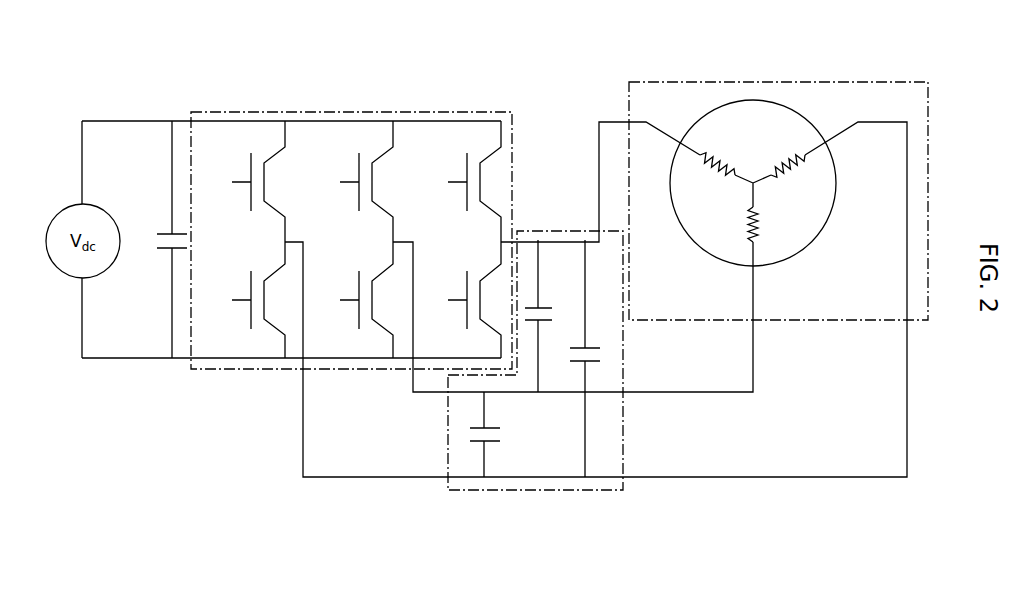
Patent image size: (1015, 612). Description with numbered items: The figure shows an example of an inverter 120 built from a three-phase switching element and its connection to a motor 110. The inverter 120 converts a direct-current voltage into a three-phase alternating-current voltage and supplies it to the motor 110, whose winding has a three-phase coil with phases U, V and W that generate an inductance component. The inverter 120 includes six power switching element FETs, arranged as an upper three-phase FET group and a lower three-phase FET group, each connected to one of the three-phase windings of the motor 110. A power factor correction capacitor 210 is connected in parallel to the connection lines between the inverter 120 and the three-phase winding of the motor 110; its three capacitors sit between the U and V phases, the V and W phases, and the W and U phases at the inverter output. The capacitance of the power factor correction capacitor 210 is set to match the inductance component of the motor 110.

The motor 110 is at (768, 82).
The inverter 120 is at (350, 111).
The power factor correction capacitor 210 is at (537, 491).